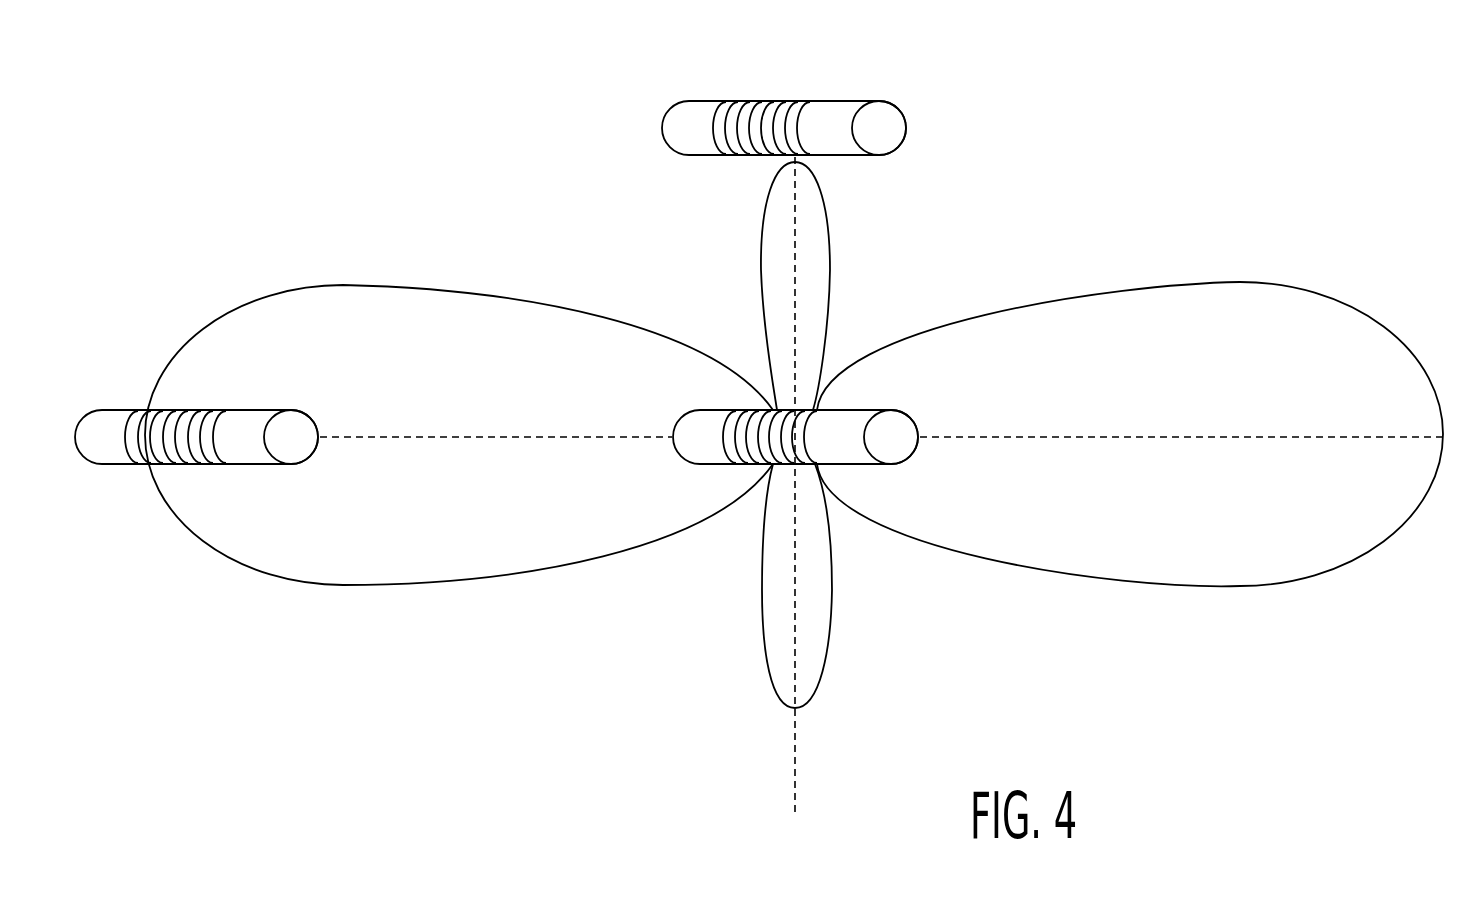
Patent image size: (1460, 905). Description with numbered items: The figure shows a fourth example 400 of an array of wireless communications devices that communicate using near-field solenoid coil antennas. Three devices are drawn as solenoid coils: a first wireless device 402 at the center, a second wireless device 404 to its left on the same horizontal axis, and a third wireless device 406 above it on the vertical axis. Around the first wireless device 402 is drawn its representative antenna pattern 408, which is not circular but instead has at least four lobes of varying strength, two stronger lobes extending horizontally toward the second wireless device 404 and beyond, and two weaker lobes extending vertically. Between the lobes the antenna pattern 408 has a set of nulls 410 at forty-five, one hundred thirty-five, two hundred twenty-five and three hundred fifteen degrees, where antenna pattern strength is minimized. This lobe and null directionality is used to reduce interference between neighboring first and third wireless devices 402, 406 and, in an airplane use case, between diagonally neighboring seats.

The fourth example 400 is at (191, 98).
The first wireless device 402 is at (898, 410).
The second wireless device 404 is at (262, 410).
The third wireless device 406 is at (862, 100).
The antenna pattern 408 is at (455, 294).
The nulls 410 is at (774, 408).